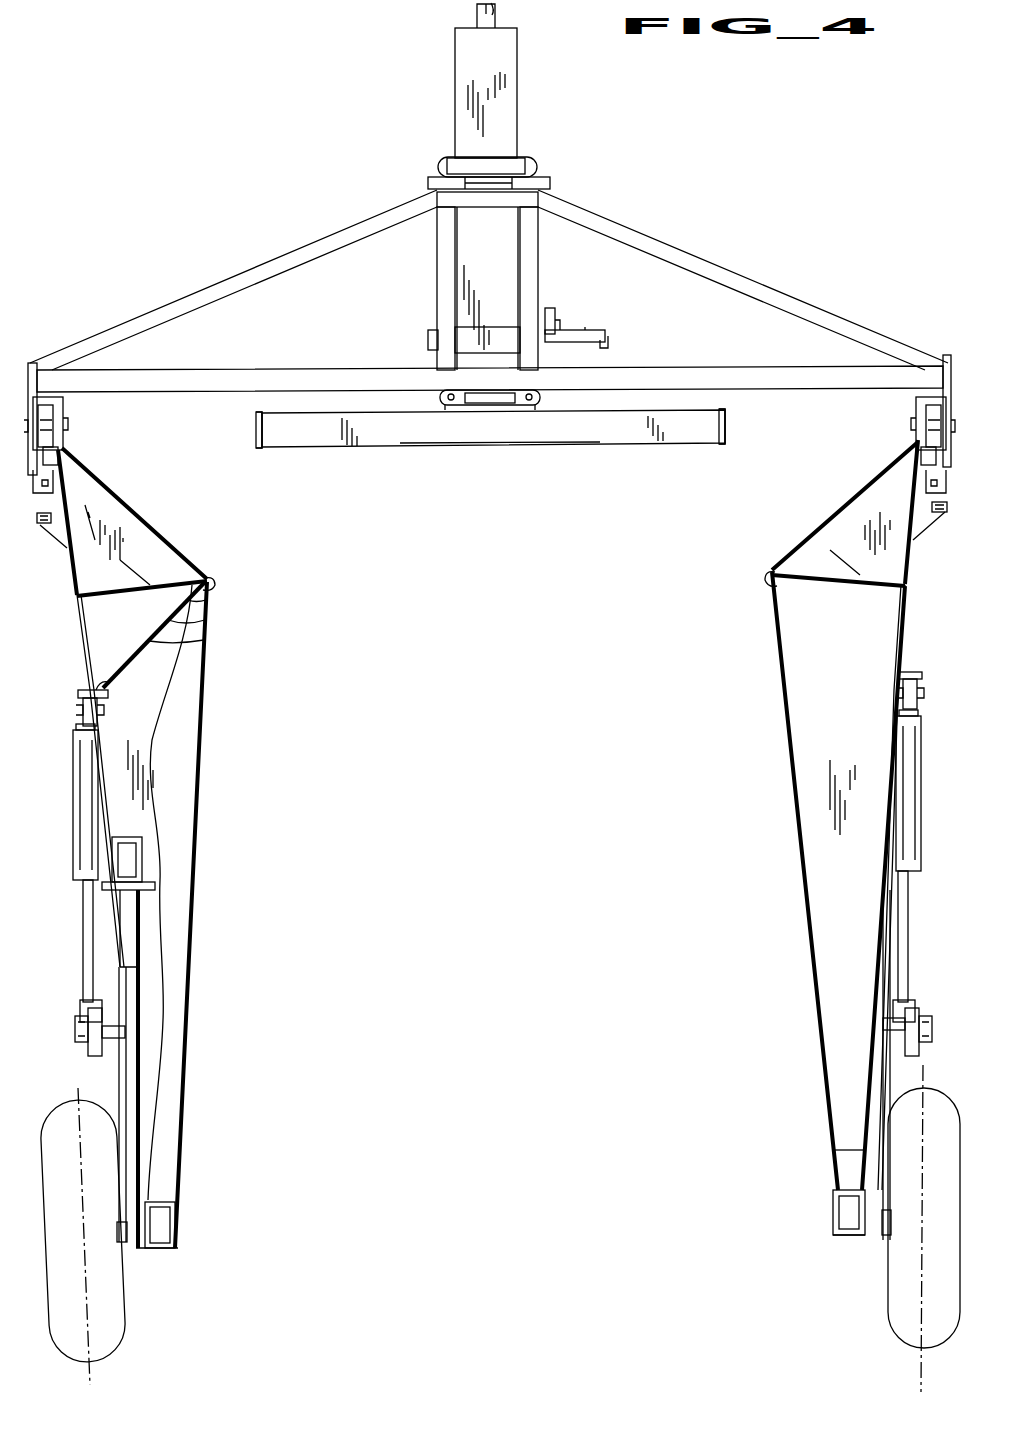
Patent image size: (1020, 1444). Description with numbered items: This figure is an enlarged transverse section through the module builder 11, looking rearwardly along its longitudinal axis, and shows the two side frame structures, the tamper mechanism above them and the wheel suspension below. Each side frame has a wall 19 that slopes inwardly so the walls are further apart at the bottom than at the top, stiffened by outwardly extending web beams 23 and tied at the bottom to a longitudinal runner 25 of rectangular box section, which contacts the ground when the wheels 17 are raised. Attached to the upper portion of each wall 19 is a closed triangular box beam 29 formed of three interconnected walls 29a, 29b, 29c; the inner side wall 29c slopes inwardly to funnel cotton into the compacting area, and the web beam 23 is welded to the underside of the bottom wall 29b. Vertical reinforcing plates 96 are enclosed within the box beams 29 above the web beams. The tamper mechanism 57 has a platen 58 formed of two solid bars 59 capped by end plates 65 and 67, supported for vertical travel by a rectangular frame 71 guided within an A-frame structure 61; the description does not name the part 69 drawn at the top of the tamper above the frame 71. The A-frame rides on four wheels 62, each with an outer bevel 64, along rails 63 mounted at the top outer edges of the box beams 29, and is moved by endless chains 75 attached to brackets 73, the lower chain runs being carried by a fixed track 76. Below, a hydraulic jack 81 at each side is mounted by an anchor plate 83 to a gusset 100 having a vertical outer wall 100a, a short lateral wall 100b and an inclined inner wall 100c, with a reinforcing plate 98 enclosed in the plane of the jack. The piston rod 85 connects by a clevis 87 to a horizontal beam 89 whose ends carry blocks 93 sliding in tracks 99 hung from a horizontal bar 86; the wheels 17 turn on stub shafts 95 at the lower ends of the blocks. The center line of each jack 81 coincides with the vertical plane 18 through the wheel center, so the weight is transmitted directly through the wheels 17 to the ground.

The module builder 11 is at (674, 120).
The wheels 17 is at (108, 1300).
The vertical plane 18 is at (88, 1340).
The wall 19 is at (196, 793).
The web beams 23 is at (152, 749).
The longitudinal runners 25 is at (178, 1220).
The closed triangular box beam 29 is at (137, 514).
The wall of triangular box beam 29a is at (75, 604).
The bottom wall of triangular box beam 29b is at (215, 580).
The inner side wall of triangular box beam 29c is at (177, 545).
The tamper mechanism 57 is at (542, 95).
The platen 58 is at (346, 458).
The solid bars 59 is at (495, 447).
The A-frame structure 61 is at (644, 222).
The wheels 62 is at (66, 434).
The rails 63 is at (62, 463).
The outer bevel 64 is at (53, 400).
The end plate 65 is at (256, 434).
The end plate 67 is at (728, 426).
The piston rod 69 is at (476, 13).
The rectangular frame 71 is at (444, 61).
The brackets 73 is at (62, 490).
The endless chain 75 is at (62, 475).
The fixed track 76 is at (43, 535).
The hydraulic jack 81 is at (90, 805).
The anchor plate 83 is at (80, 694).
The piston rod 85 is at (88, 938).
The horizontal bar 86 is at (143, 858).
The clevis 87 is at (80, 1008).
The horizontal beam 89 is at (100, 1053).
The blocks 93 is at (126, 1053).
The stub shafts 95 is at (127, 1243).
The plates 96 is at (132, 535).
The reinforcing plate 98 is at (200, 645).
The tracks 99 is at (136, 911).
The gussets 100 is at (196, 603).
The outer wall of gusset 100a is at (86, 644).
The short wall of gusset 100b is at (104, 689).
The inner wall of gusset 100c is at (186, 626).